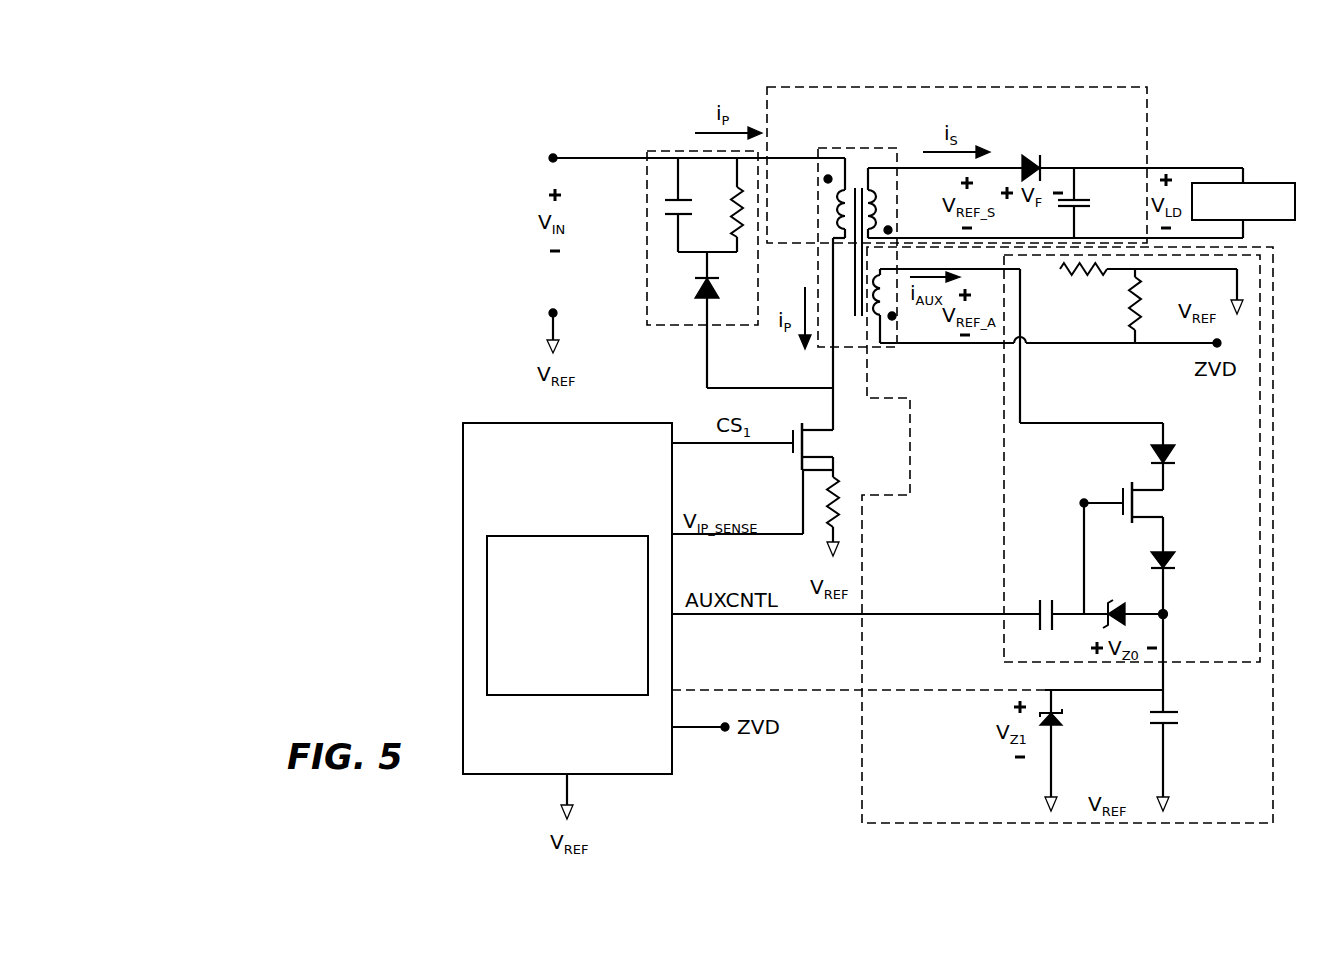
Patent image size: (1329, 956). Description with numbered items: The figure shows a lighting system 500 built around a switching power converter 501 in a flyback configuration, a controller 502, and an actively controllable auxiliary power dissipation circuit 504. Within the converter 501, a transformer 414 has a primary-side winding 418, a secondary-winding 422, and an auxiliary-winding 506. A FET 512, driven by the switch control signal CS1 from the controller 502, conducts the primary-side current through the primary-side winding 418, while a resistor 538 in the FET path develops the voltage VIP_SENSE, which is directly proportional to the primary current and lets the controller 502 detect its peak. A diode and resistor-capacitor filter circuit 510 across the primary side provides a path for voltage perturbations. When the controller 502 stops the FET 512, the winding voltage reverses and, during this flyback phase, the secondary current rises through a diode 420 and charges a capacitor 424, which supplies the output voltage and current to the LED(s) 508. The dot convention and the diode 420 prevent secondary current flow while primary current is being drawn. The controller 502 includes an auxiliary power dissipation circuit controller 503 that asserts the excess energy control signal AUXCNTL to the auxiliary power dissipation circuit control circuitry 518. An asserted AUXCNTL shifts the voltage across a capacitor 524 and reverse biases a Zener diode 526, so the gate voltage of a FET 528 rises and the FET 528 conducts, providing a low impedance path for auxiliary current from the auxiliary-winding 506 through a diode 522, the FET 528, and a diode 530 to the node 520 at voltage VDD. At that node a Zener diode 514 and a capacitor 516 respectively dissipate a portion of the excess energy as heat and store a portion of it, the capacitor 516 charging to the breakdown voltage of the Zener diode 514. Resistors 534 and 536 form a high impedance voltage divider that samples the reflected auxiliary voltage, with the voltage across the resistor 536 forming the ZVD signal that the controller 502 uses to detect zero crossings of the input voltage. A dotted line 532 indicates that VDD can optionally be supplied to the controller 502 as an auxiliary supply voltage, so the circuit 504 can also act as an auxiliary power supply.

The lighting system 500 is at (477, 122).
The switching power converter 501 is at (767, 82).
The auxiliary power dissipation circuit 504 is at (862, 827).
The transformer 414 is at (822, 147).
The primary-side winding 418 is at (833, 199).
The secondary-winding 422 is at (888, 219).
The diode 420 is at (1027, 153).
The capacitor 424 is at (1086, 200).
The LED(s) 508 is at (1275, 183).
The diode and resistor-capacitor filter circuit 510 is at (647, 250).
The auxiliary-winding 506 is at (887, 330).
The FET 512 is at (803, 470).
The resistor 538 is at (836, 478).
The auxiliary power dissipation circuit control circuitry 518 is at (1004, 512).
The controller 502 is at (567, 598).
The auxiliary power dissipation circuit controller 503 is at (567, 615).
The diode 522 is at (1170, 445).
The FET 528 is at (1165, 505).
The diode 530 is at (1170, 553).
The node 520 is at (1168, 610).
The Zener diode 526 is at (1110, 604).
The capacitor 524 is at (1040, 600).
The dotted line 532 is at (788, 690).
The resistor 534 is at (1087, 270).
The resistor 536 is at (1125, 300).
The Zener diode 514 is at (1055, 725).
The capacitor 516 is at (1178, 726).